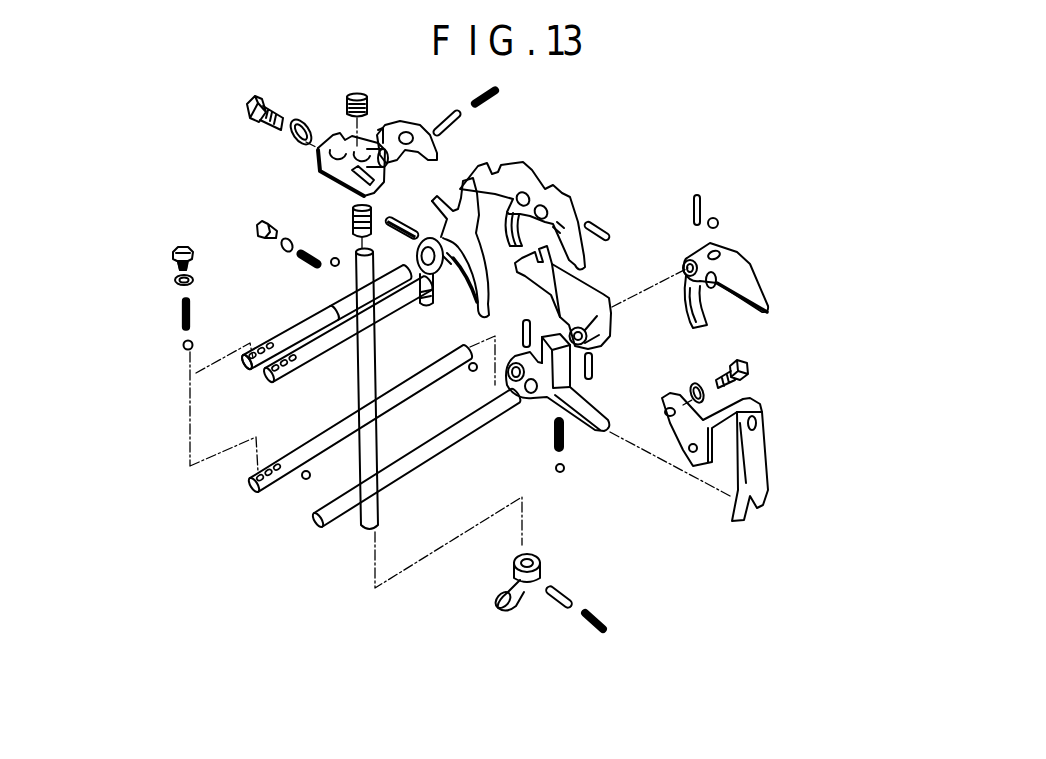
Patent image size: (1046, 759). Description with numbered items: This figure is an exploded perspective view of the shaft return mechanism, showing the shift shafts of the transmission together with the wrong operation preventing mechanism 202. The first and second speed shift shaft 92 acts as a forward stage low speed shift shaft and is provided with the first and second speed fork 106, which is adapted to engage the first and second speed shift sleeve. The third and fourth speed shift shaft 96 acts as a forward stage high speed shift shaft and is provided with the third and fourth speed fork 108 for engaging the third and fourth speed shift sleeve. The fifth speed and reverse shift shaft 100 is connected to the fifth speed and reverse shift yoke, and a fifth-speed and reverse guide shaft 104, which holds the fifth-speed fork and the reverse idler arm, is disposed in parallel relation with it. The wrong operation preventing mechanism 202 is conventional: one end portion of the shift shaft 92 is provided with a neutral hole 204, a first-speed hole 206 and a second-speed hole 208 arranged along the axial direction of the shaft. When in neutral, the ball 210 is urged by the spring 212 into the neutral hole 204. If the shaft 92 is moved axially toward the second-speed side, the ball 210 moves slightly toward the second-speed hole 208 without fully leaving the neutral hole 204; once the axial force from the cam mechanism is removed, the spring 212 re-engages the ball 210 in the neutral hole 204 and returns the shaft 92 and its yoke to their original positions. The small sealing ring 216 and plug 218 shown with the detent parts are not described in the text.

The 1st and 2nd speed shift shaft 92 is at (319, 320).
The 3rd and 4th speed shift shaft 96 is at (325, 360).
The 5th speed and reverse shift shaft 100 is at (276, 470).
The 5th-speed and reverse guide shaft 104 is at (341, 518).
The 1st and 2nd speed fork 106 is at (430, 240).
The 3rd and 4th speed fork 108 is at (560, 196).
The wrong operation preventing mechanism 202 is at (224, 240).
The neutral hole 204 is at (257, 348).
The first-speed hole 206 is at (270, 345).
The second-speed hole 208 is at (246, 366).
The ball 210 is at (183, 348).
The spring 212 is at (181, 321).
The sealing ring 216 is at (176, 280).
The detent plug 218 is at (183, 246).